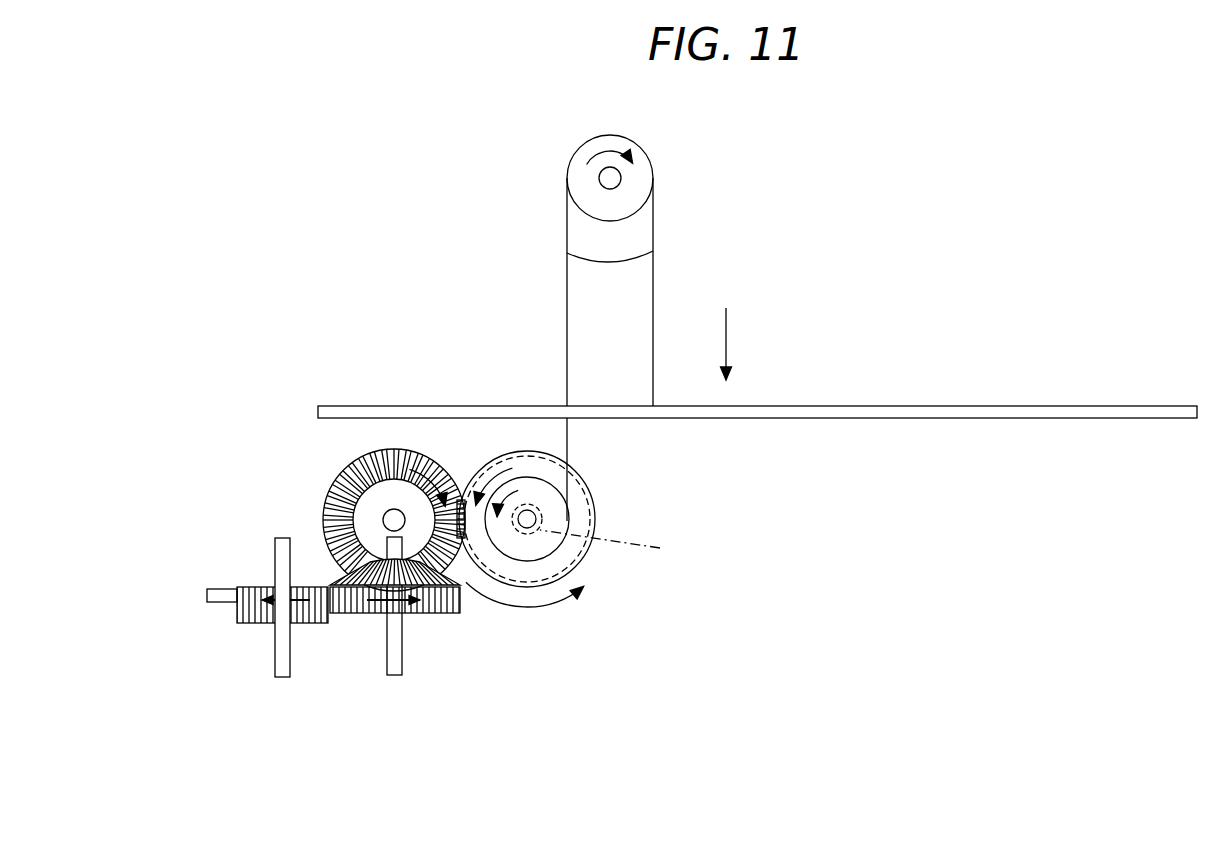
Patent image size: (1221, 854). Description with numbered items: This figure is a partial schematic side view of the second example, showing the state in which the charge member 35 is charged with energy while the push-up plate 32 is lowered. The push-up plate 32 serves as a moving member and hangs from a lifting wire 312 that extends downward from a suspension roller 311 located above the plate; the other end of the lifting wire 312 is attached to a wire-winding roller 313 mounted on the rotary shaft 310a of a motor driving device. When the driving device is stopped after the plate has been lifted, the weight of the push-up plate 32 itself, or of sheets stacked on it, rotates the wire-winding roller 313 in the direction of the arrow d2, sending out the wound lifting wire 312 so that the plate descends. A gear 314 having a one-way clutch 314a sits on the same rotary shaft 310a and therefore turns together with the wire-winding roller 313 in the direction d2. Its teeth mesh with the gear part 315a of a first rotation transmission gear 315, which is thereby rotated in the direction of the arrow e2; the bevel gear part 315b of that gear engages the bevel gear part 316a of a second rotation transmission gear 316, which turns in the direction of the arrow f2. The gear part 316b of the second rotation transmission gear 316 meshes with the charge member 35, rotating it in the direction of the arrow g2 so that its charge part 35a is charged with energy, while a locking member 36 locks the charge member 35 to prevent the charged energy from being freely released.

The push-up plate 32 is at (988, 406).
The suspension roller 311 is at (634, 177).
The lifting wire 312 is at (653, 257).
The wire-winding roller 313 is at (548, 546).
The gear 314 is at (598, 507).
The one-way clutch 314a is at (620, 540).
The rotary shaft 310a is at (524, 534).
The first rotation transmission gear 315 is at (394, 407).
The gear part 315a is at (400, 450).
The bevel gear part 315b is at (367, 450).
The second rotation transmission gear 316 is at (426, 681).
The bevel gear part 316a is at (443, 615).
The gear part 316b is at (436, 578).
The charge member 35 is at (252, 623).
The charge part 35a is at (305, 623).
The locking member 36 is at (220, 588).
The arrow d2 is at (517, 510).
The arrow e2 is at (438, 490).
The arrow f2 is at (366, 613).
The arrow g2 is at (303, 588).